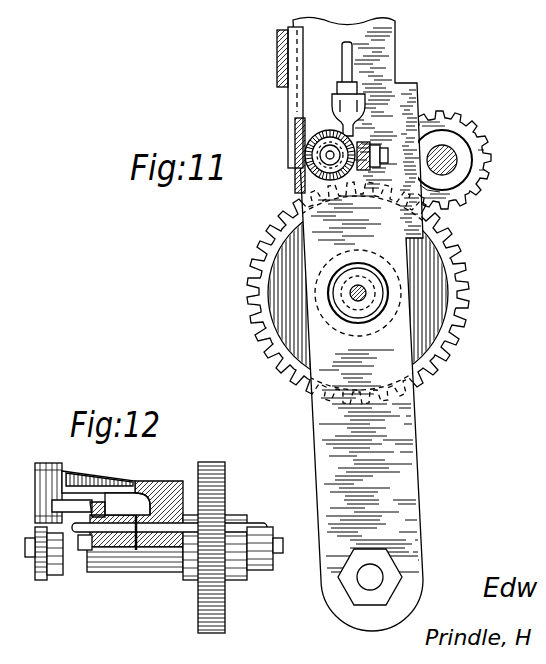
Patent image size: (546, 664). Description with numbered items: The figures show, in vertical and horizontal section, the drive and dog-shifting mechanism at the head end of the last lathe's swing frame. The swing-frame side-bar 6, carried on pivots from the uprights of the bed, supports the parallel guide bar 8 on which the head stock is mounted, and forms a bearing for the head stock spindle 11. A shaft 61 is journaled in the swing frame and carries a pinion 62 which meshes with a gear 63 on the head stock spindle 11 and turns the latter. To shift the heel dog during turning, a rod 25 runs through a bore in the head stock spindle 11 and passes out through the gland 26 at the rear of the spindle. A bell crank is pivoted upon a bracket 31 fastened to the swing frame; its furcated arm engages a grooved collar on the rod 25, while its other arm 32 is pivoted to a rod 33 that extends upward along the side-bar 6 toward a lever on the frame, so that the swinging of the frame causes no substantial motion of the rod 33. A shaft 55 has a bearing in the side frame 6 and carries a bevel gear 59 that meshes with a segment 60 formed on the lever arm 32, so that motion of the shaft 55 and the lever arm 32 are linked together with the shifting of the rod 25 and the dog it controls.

In FIG. 11, the swing-frame side-bar 6 is at (390, 62).
In FIG. 11, the guide bar 8 is at (378, 577).
In FIG. 11, the head stock spindle 11 is at (463, 268).
In FIG. 11, the rod 25 is at (363, 298).
In FIG. 11, the gland 26 is at (337, 308).
In FIG. 11, the bracket 31 is at (278, 50).
In FIG. 11, the arm of bell crank 32 is at (370, 137).
In FIG. 11, the rod 33 is at (345, 57).
In FIG. 11, the shaft 55 is at (330, 155).
In FIG. 12, the shaft 55 is at (230, 525).
In FIG. 11, the bevel gear 59 is at (322, 128).
In FIG. 11, the segment 60 is at (295, 127).
In FIG. 11, the shaft 61 is at (450, 155).
In FIG. 11, the pinion 62 is at (487, 173).
In FIG. 11, the gear 63 is at (430, 188).